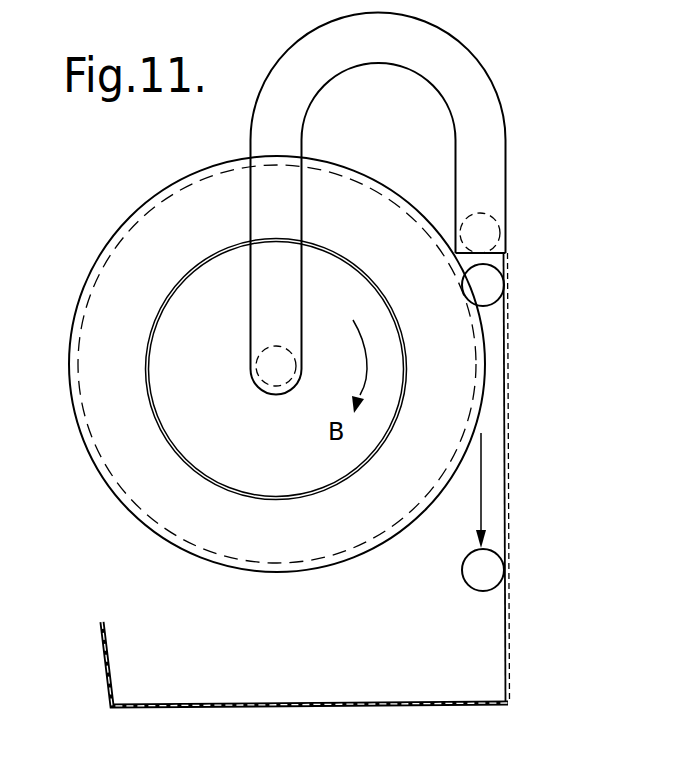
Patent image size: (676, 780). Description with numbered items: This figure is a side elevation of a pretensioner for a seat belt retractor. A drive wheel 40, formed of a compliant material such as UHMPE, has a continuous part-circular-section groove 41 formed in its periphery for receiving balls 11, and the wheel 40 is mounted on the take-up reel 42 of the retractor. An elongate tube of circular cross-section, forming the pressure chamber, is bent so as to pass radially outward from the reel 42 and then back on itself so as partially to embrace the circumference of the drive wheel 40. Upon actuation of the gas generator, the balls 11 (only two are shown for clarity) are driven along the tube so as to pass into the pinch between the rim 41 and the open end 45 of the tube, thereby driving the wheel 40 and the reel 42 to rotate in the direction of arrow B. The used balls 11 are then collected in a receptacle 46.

The balls 11 is at (484, 284).
The drive wheel 40 is at (157, 533).
The part-circular-section groove 41 is at (564, 0).
The take-up reel 42 is at (163, 427).
The open end of the tube 45 is at (490, 393).
The receptacle 46 is at (104, 667).